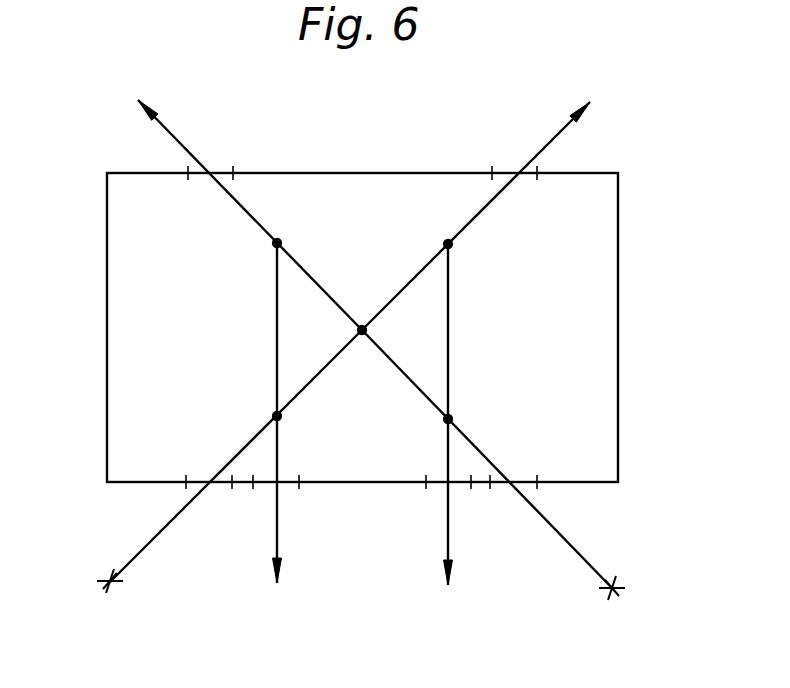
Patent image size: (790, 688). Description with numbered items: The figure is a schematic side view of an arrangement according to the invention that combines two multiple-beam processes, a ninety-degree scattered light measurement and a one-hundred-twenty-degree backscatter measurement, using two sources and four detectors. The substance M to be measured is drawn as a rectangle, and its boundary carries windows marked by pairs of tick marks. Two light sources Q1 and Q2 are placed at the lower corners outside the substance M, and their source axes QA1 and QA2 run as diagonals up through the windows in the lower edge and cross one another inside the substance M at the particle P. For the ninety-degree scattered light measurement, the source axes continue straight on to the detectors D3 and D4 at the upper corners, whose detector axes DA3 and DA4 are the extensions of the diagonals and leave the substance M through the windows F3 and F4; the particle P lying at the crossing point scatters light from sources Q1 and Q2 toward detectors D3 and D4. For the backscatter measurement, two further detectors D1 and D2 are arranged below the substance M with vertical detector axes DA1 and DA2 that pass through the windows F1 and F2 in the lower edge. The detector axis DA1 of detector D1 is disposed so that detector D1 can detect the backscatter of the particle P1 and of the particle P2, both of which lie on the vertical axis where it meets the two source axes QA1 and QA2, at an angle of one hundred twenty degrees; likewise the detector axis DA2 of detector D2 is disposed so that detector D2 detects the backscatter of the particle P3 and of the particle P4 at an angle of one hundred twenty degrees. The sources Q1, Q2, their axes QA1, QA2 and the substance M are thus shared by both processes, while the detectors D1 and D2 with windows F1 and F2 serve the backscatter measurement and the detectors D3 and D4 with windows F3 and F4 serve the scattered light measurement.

The substance to be measured M is at (361, 193).
The particle P is at (363, 335).
The particle P1 is at (274, 416).
The particle P2 is at (274, 243).
The particle P3 is at (452, 419).
The particle P4 is at (452, 244).
The detector D1 is at (276, 591).
The detector D2 is at (451, 592).
The detector D3 is at (598, 98).
The detector D4 is at (132, 94).
The detector axis DA1 is at (278, 548).
The detector axis DA2 is at (449, 549).
The detector axis DA3 is at (556, 136).
The detector axis DA4 is at (166, 129).
The source axis QA1 is at (241, 451).
The source axis QA2 is at (480, 451).
The source Q1 is at (92, 583).
The source Q2 is at (633, 587).
The window F1 is at (290, 486).
The window F2 is at (434, 486).
The window F3 is at (503, 171).
The window F4 is at (223, 170).